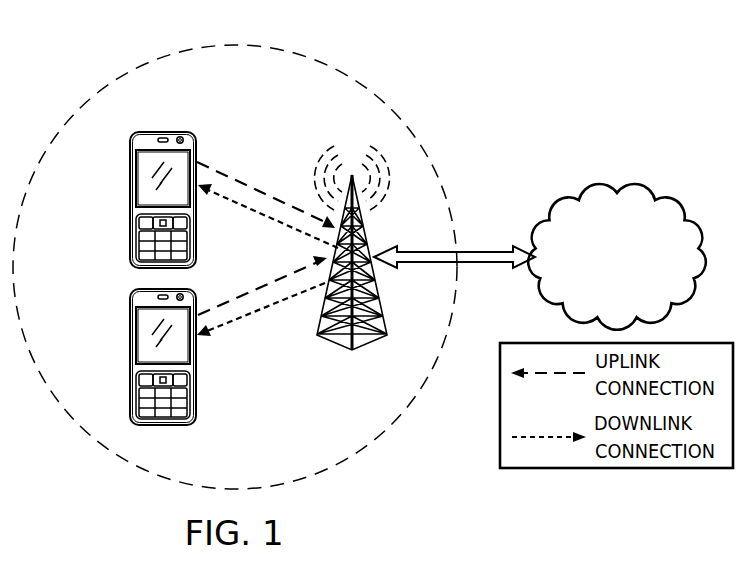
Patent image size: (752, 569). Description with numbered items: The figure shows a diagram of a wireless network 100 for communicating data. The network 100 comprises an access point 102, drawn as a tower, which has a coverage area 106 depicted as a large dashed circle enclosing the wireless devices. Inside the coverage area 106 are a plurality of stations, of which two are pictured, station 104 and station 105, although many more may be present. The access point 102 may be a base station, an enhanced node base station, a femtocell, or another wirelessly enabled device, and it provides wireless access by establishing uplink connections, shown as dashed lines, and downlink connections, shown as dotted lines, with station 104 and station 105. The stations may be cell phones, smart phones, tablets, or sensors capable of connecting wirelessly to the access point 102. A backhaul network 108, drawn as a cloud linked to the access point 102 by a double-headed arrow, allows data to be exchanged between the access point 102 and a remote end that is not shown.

The network 100 is at (498, 124).
The access point 102 is at (372, 347).
The station 104 is at (130, 195).
The station 105 is at (130, 361).
The coverage area 106 is at (134, 70).
The backhaul network 108 is at (614, 194).